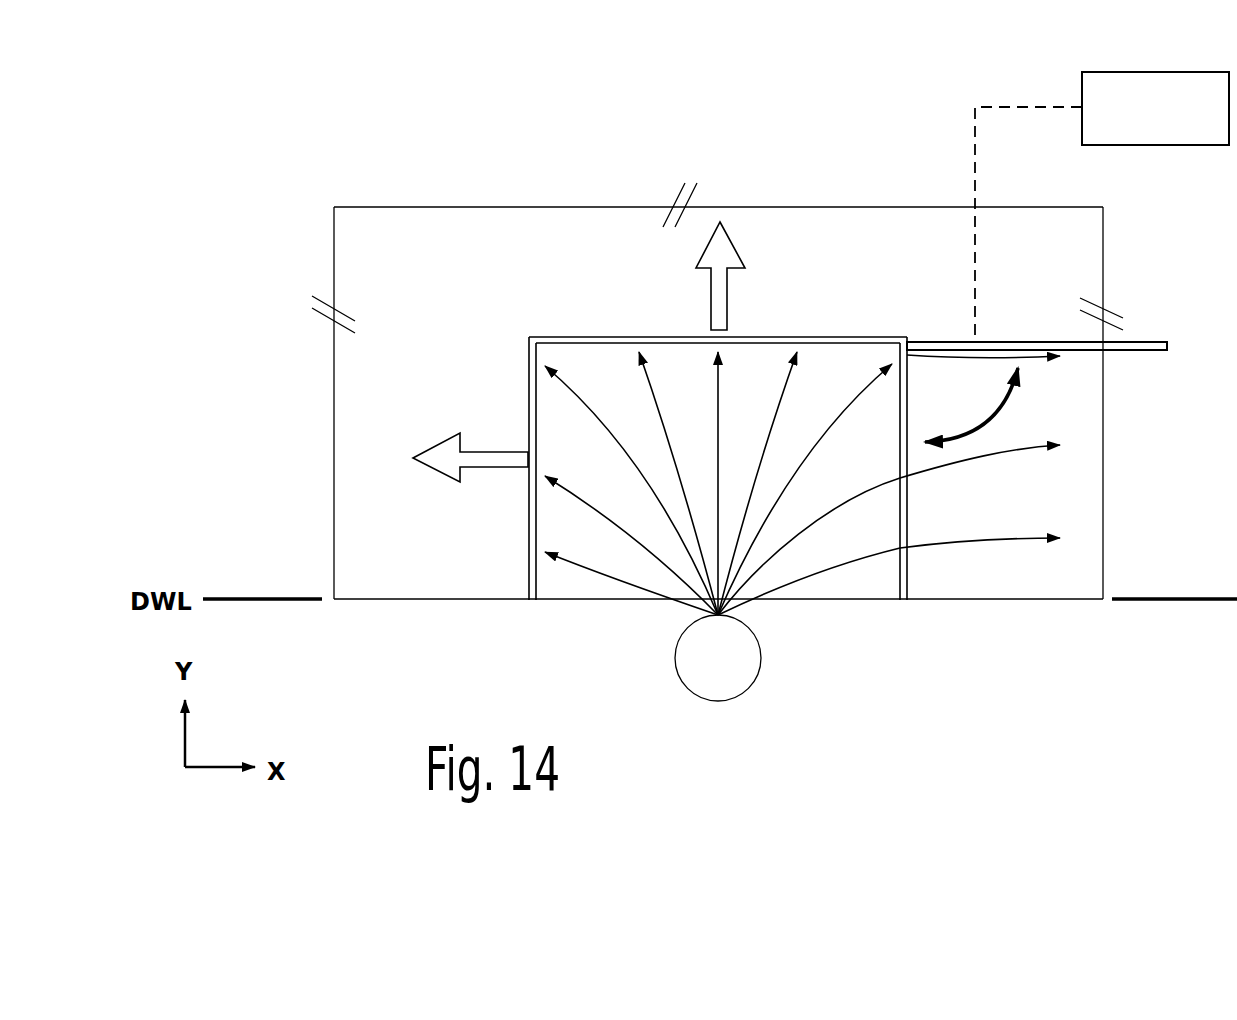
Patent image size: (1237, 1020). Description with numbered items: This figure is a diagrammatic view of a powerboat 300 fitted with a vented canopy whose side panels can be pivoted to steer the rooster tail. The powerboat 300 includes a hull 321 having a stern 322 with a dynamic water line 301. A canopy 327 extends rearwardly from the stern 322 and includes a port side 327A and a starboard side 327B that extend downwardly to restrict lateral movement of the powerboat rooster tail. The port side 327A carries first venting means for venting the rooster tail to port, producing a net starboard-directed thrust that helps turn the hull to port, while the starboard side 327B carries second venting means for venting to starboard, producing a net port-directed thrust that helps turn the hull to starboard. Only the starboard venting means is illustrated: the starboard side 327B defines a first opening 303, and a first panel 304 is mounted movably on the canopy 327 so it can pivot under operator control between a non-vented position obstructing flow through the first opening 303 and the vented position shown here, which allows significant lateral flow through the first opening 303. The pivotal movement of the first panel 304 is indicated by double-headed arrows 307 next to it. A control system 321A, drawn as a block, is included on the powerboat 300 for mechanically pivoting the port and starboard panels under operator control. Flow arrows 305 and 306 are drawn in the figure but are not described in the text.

The powerboat 300 is at (315, 160).
The dynamic water line 301 is at (1143, 602).
The first opening 303 is at (890, 518).
The first panel 304 is at (1143, 353).
The lateral flow arrow 305 is at (438, 462).
The upward flow arrow 306 is at (722, 240).
The double-headed arrows 307 is at (1012, 407).
The hull 321 is at (332, 357).
The control system 321A is at (1187, 150).
The stern 322 is at (1091, 221).
The canopy 327 is at (722, 398).
The port side 327A is at (527, 585).
The starboard side 327B is at (908, 587).